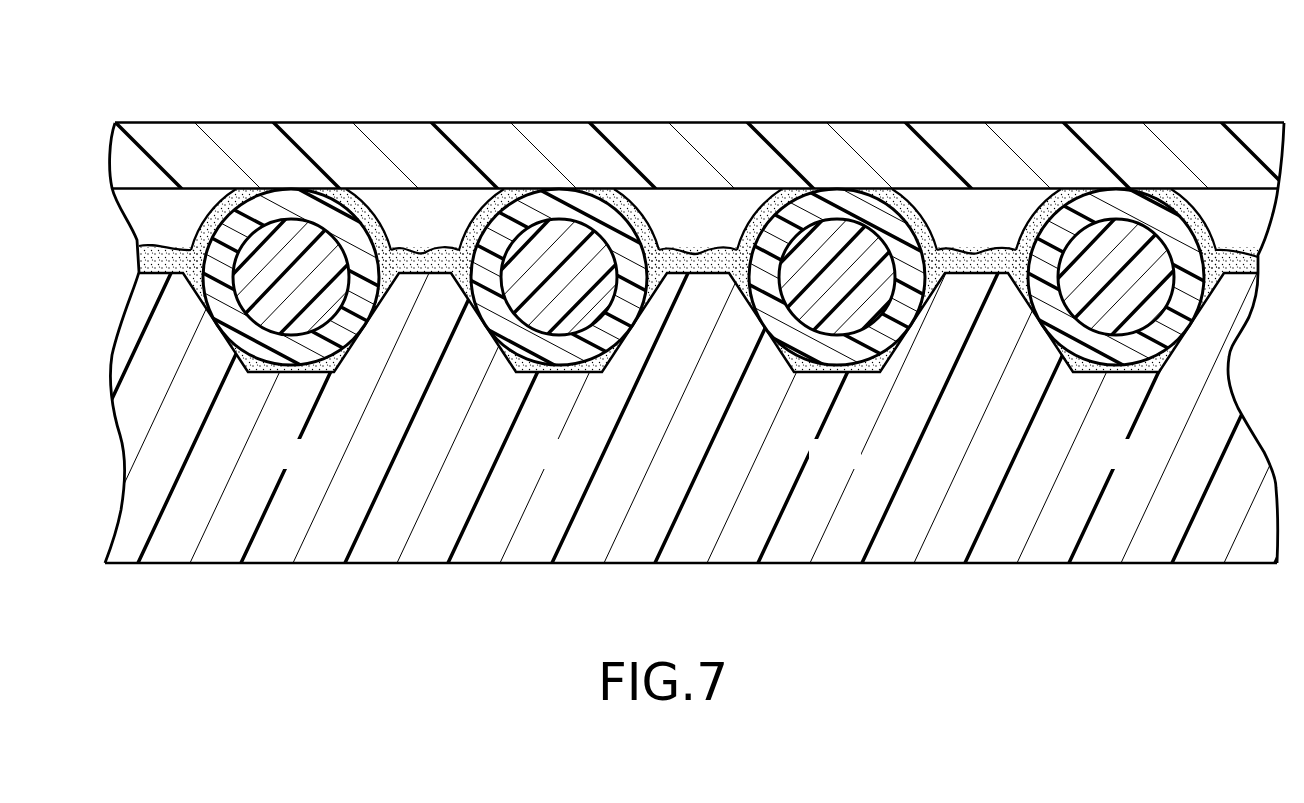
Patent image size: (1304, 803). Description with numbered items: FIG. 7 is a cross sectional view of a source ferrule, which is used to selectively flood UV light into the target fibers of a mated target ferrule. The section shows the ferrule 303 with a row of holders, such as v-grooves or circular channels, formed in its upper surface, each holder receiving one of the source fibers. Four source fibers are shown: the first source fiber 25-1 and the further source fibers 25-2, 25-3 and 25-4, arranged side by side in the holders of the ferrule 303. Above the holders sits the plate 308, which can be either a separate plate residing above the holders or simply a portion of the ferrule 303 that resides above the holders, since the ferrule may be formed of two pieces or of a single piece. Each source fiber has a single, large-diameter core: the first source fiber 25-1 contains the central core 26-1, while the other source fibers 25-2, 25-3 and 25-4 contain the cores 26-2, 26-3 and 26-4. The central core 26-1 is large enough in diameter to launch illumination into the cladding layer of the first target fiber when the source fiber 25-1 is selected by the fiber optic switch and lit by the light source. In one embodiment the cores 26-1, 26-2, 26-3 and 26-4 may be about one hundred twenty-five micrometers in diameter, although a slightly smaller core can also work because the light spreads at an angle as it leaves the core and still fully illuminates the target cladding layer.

The first source fiber 25-1 is at (1178, 210).
The source fiber 25-2 is at (902, 210).
The source fiber 25-3 is at (622, 210).
The source fiber 25-4 is at (357, 210).
The central core 26-1 is at (1131, 332).
The core 26-2 is at (856, 327).
The core 26-3 is at (573, 332).
The core 26-4 is at (305, 332).
The plate 308 is at (796, 138).
The ferrule 303 is at (833, 547).